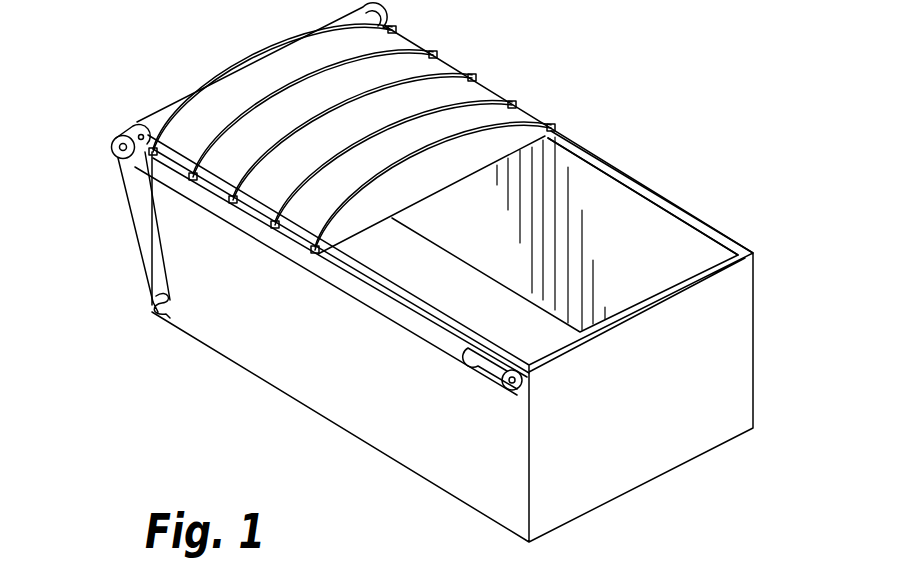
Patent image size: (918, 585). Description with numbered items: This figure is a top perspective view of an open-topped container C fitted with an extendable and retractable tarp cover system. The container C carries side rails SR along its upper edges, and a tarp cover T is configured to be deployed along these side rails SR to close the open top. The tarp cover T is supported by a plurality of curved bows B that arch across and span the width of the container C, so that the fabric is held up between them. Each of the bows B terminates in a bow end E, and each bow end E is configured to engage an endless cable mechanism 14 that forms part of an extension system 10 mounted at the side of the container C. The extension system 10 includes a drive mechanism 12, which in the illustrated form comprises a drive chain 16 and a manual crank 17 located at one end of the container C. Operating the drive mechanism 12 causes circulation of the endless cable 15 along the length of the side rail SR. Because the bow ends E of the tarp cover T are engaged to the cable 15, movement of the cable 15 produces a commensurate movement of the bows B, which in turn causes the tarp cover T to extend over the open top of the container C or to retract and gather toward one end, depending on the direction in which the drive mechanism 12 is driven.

The extension system 10 is at (105, 116).
The drive mechanism 12 is at (130, 242).
The endless cable mechanism 14 is at (356, 313).
The endless cable 15 is at (427, 343).
The drive chain 16 is at (128, 203).
The manual crank 17 is at (162, 318).
The bow end E is at (233, 206).
The curved bows B is at (450, 75).
The tarp cover T is at (516, 110).
The side rails SR is at (684, 218).
The container C is at (688, 375).